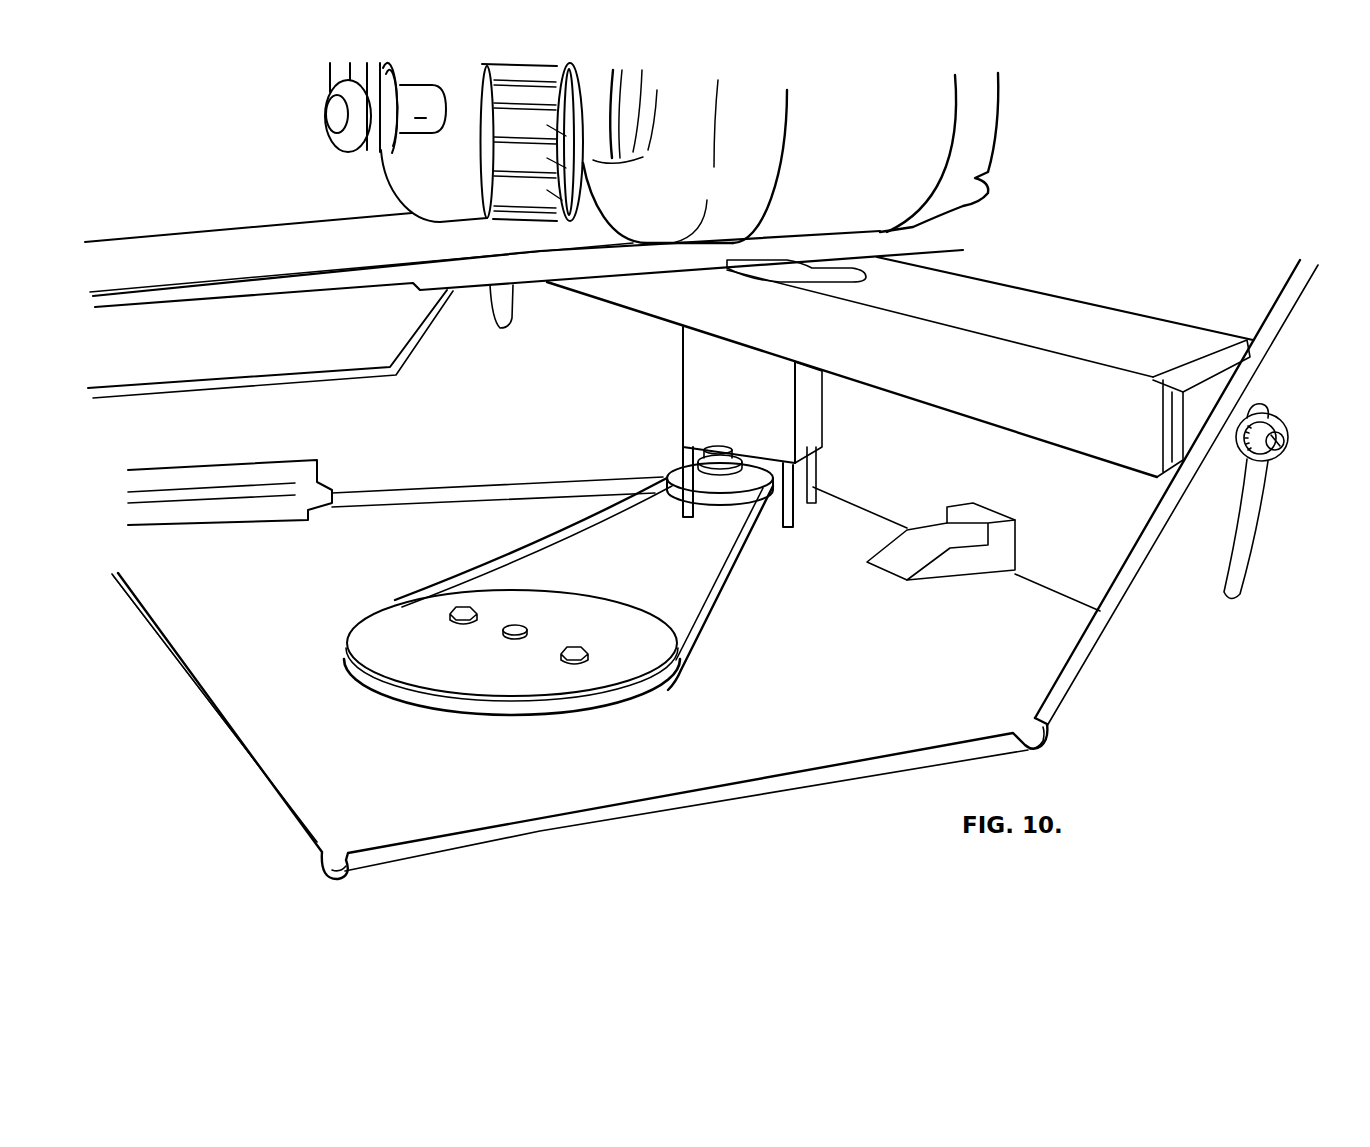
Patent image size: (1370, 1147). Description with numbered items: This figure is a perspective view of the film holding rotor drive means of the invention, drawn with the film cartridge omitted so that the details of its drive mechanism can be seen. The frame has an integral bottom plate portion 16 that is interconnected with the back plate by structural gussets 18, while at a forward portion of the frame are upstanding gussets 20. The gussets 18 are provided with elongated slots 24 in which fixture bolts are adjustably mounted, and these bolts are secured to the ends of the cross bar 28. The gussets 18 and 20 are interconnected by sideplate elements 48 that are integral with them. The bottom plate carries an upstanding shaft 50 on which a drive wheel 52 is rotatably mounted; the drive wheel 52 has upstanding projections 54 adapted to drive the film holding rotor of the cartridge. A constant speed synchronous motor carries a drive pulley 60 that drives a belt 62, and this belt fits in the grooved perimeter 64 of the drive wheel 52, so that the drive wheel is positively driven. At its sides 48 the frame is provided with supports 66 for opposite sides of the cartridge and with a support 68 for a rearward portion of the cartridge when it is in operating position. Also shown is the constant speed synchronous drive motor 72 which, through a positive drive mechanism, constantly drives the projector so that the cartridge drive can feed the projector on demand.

The bottom plate portion 16 is at (870, 709).
The structural gussets 18 is at (1203, 661).
The upstanding gussets 20 is at (199, 766).
The elongated slots 24 is at (512, 318).
The cross bar 28 is at (680, 305).
The sideplate elements 48 is at (418, 449).
The upstanding shaft 50 is at (527, 631).
The drive wheel 52 is at (693, 632).
The upstanding projections 54 is at (560, 660).
The drive pulley 60 is at (718, 498).
The belt 62 is at (735, 566).
The grooved perimeter 64 is at (676, 673).
The supports 66 is at (297, 474).
The support 68 is at (900, 581).
The constant speed synchronous drive motor 72 is at (793, 218).